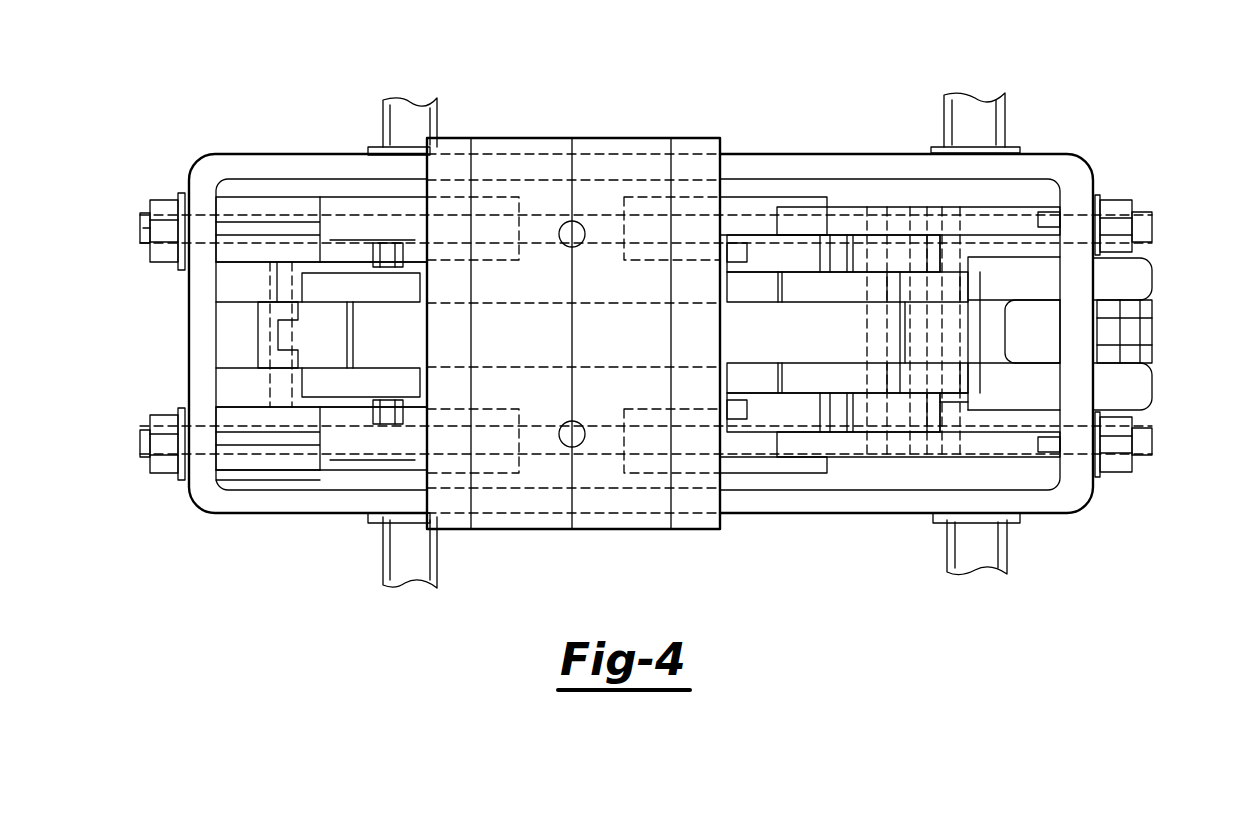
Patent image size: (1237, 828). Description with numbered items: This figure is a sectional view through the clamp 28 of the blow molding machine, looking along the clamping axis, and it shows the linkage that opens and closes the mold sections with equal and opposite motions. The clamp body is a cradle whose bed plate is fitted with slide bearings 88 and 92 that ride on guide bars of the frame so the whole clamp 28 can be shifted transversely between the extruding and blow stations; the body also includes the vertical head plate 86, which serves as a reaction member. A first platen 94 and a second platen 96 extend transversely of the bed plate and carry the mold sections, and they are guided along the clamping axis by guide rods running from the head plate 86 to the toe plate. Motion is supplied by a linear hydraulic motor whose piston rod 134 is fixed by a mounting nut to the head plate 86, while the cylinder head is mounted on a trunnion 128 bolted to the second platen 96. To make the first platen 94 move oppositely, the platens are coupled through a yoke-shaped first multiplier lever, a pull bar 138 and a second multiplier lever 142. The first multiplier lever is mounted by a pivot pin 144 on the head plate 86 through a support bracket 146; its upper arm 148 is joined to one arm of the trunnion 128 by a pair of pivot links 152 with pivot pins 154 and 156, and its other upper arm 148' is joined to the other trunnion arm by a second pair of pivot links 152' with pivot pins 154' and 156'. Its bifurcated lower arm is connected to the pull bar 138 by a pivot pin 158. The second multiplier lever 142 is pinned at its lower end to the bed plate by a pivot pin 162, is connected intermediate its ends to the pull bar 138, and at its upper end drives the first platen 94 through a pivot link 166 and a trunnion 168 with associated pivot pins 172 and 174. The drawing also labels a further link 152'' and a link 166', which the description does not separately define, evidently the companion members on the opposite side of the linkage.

The clamp 28 is at (1113, 143).
The head plate 86 is at (1138, 395).
The slide bearing 88 is at (997, 550).
The slide bearing 92 is at (423, 587).
The first platen 94 is at (458, 158).
The second platen 96 is at (698, 145).
The trunnion 128 is at (753, 390).
The piston rod 134 is at (1050, 323).
The pull bar 138 is at (765, 312).
The second multiplier lever 142 is at (348, 337).
The pivot pin 144 is at (910, 340).
The support bracket 146 is at (978, 370).
The upper arm 148 is at (995, 391).
The upper arm 148' is at (1149, 265).
The pivot links 152 is at (833, 427).
The pivot links 152' is at (833, 201).
The roller 152'' is at (870, 332).
The pivot pin 154 is at (918, 501).
The pivot pin 154' is at (918, 210).
The pivot pin 156 is at (773, 505).
The pivot pin 156' is at (783, 183).
The pivot pin 158 is at (972, 313).
The pivot pin 162 is at (270, 380).
The pivot link 166 is at (321, 435).
The upper slide block 166' is at (321, 236).
The trunnion 168 is at (378, 418).
The pivot pin 172 is at (302, 305).
The pivot pin 174 is at (393, 320).